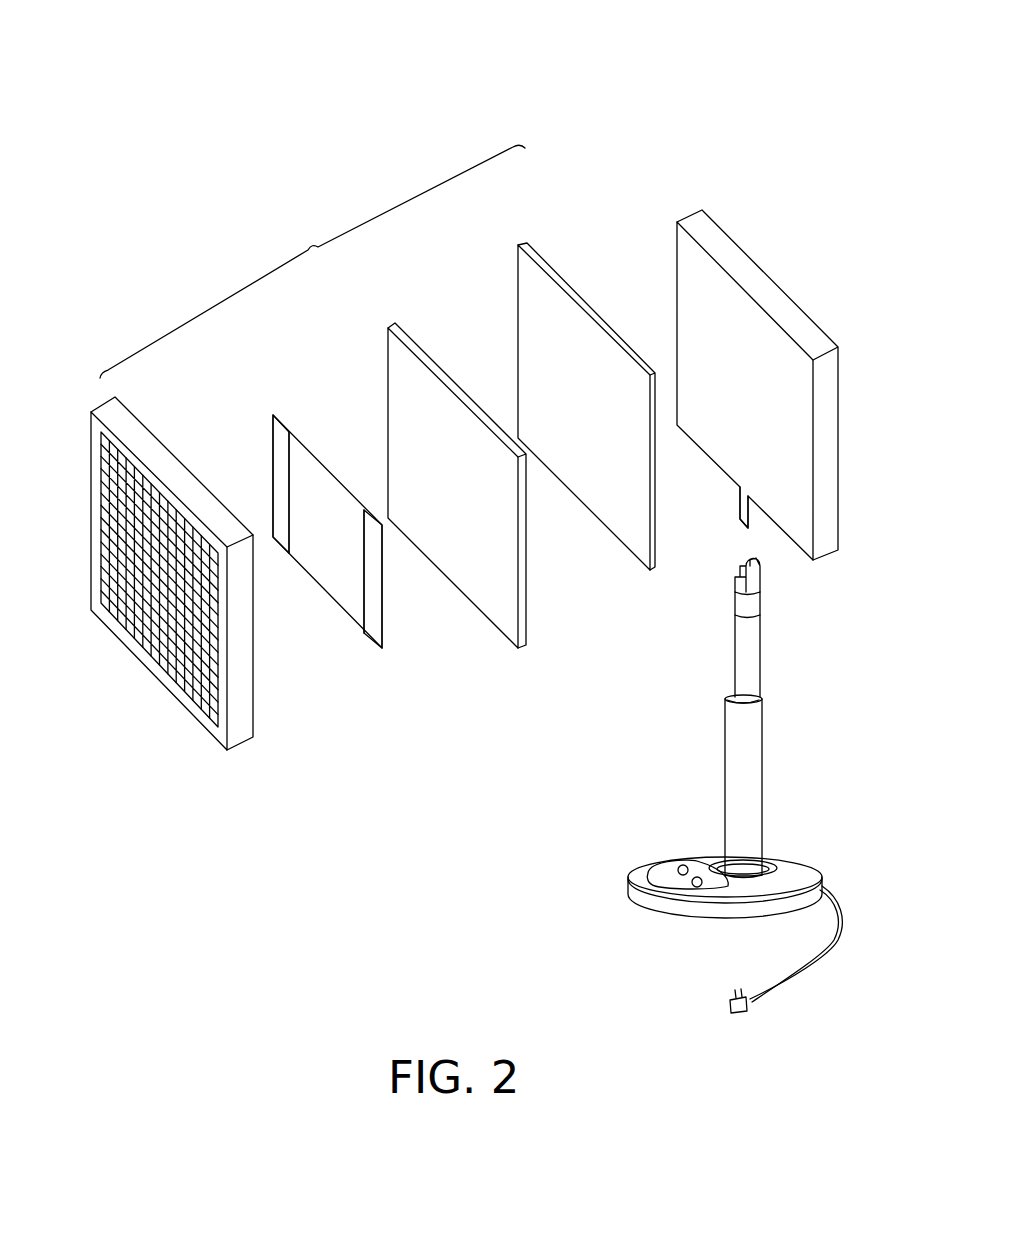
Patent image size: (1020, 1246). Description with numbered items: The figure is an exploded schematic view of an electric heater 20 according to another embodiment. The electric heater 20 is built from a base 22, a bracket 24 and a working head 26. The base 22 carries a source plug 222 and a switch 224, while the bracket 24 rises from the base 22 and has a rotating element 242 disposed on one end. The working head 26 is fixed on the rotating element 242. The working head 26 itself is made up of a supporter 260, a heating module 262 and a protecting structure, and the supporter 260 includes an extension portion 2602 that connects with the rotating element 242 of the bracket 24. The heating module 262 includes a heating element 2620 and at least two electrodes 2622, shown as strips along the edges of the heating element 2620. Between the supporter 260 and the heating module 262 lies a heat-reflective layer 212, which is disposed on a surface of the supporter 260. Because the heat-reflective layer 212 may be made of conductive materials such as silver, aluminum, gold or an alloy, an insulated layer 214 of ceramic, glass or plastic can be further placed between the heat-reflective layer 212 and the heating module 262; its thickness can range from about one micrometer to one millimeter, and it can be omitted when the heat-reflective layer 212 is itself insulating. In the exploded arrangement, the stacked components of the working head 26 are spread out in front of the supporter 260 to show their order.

The electric heater 20 is at (551, 68).
The base 22 is at (637, 878).
The source plug 222 is at (738, 1012).
The switch 224 is at (685, 865).
The bracket 24 is at (748, 740).
The rotating element 242 is at (755, 573).
The working head 26 is at (312, 261).
The supporter 260 is at (688, 253).
The extension portion 2602 is at (755, 524).
The heating module 262 is at (320, 433).
The heating element 2620 is at (332, 565).
The electrodes 2622 is at (283, 448).
The heat-reflective layer 212 is at (530, 263).
The insulated layer 214 is at (392, 322).